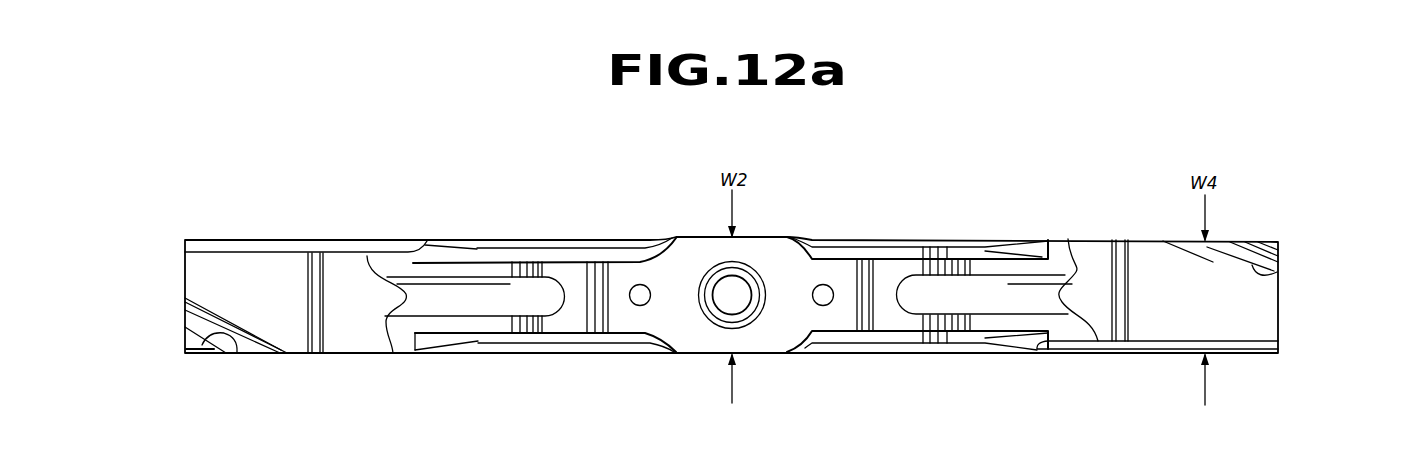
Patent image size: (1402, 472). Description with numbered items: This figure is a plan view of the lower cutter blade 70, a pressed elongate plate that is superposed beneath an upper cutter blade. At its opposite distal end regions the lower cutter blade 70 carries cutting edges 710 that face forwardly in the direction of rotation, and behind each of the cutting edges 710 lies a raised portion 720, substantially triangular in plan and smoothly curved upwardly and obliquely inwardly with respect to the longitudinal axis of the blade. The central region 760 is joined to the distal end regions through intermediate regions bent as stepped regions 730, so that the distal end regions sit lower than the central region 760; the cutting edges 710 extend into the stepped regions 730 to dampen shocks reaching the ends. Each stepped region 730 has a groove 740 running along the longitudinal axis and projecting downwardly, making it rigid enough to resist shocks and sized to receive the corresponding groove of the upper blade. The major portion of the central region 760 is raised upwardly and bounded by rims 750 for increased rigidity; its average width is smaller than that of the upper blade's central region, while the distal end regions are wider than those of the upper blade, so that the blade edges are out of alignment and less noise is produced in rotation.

The lower cutter blade 70 is at (848, 222).
The cutting edges 710 is at (254, 244).
The raised portions 720 is at (237, 353).
The stepped regions 730 is at (988, 267).
The grooves 740 is at (467, 298).
The rims 750 is at (557, 262).
The central region 760 is at (768, 338).